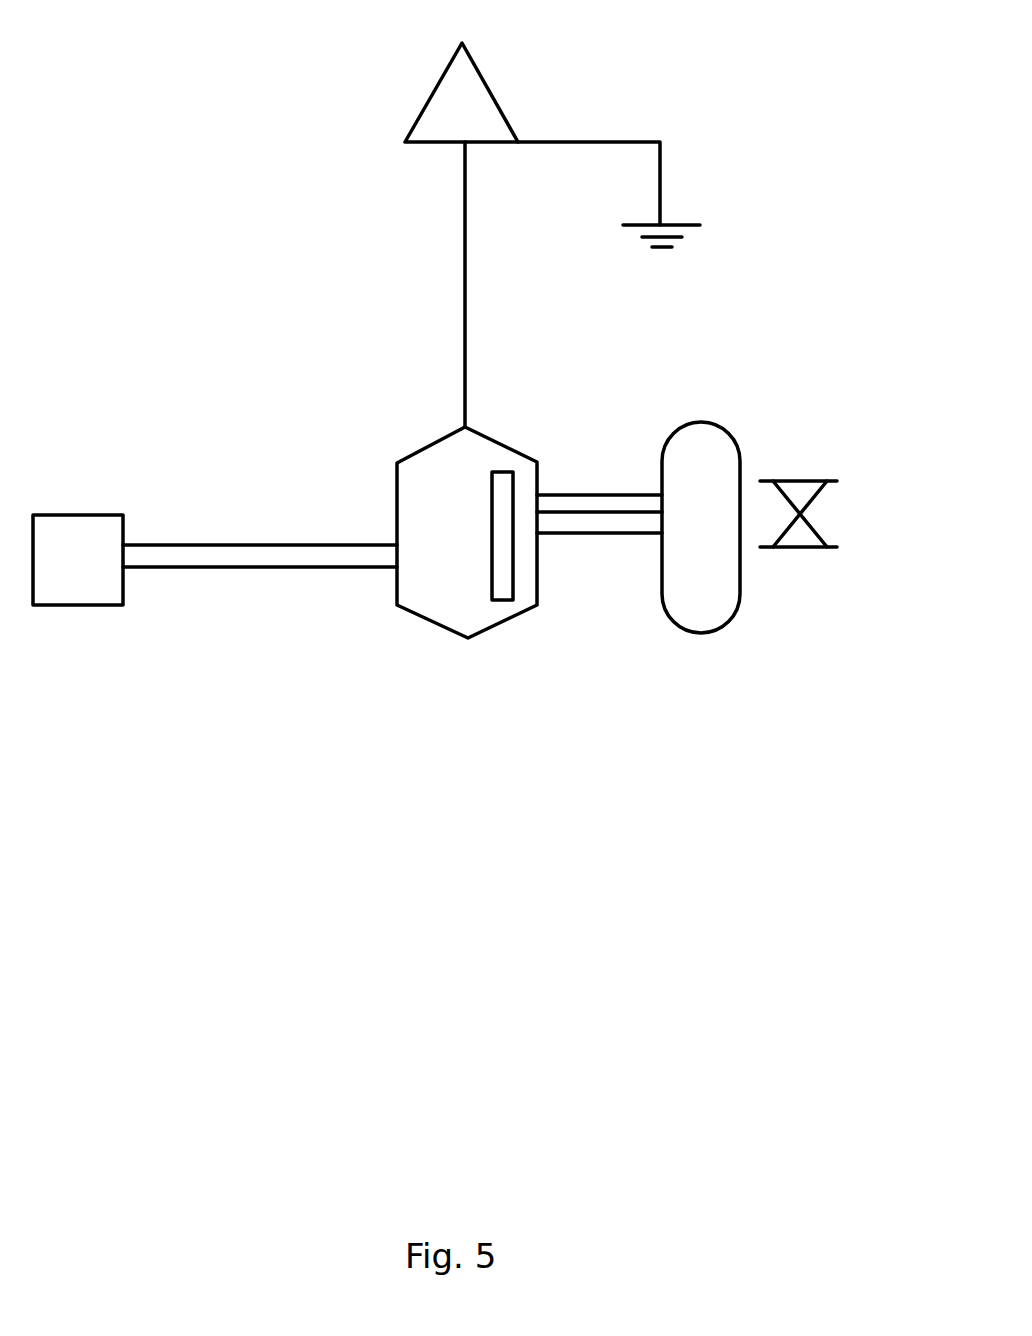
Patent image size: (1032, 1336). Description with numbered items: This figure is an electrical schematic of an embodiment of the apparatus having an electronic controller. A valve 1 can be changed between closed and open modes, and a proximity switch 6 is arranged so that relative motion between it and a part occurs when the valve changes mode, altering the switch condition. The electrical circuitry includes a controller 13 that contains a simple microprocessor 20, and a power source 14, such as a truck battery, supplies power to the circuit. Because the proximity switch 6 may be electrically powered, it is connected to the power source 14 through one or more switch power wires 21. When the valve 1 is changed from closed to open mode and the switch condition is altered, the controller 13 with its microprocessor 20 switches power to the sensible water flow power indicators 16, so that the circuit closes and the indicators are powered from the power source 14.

The valve 1 is at (835, 470).
The proximity switch 6 is at (722, 425).
The controller 13 is at (435, 625).
The power source 14 is at (88, 605).
The sensible water flow power indicators 16 is at (497, 95).
The microprocessor 20 is at (503, 600).
The switch power wires 21 is at (590, 537).